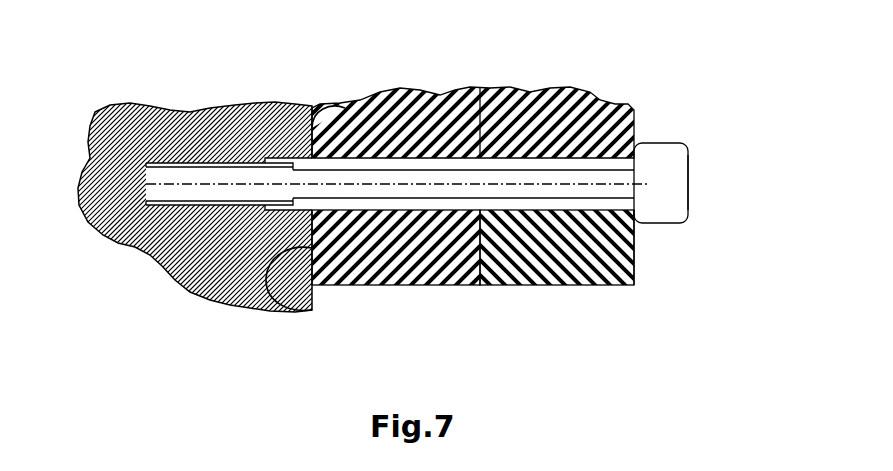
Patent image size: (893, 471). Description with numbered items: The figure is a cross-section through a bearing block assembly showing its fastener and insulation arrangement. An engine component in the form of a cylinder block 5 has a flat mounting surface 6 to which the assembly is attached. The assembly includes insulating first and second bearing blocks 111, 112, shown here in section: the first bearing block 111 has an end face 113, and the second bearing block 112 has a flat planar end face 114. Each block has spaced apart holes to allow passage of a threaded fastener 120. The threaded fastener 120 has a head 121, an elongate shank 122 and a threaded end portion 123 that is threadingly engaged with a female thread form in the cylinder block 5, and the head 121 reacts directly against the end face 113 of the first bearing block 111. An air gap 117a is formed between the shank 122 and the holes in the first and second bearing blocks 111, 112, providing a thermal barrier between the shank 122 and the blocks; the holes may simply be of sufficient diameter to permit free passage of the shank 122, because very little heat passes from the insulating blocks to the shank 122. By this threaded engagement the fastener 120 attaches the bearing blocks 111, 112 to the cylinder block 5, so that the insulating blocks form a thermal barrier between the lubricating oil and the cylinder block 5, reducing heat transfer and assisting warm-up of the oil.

The cylinder block 5 is at (110, 247).
The flat mounting surface 6 is at (322, 132).
The first bearing block 111 is at (593, 285).
The second bearing block 112 is at (392, 285).
The end face 113 is at (636, 252).
The flat planar end face 114 is at (275, 312).
The air gap 117a is at (423, 160).
The threaded fastener 120 is at (661, 143).
The head 121 is at (688, 160).
The elongate shank 122 is at (548, 165).
The threaded end portion 123 is at (195, 163).